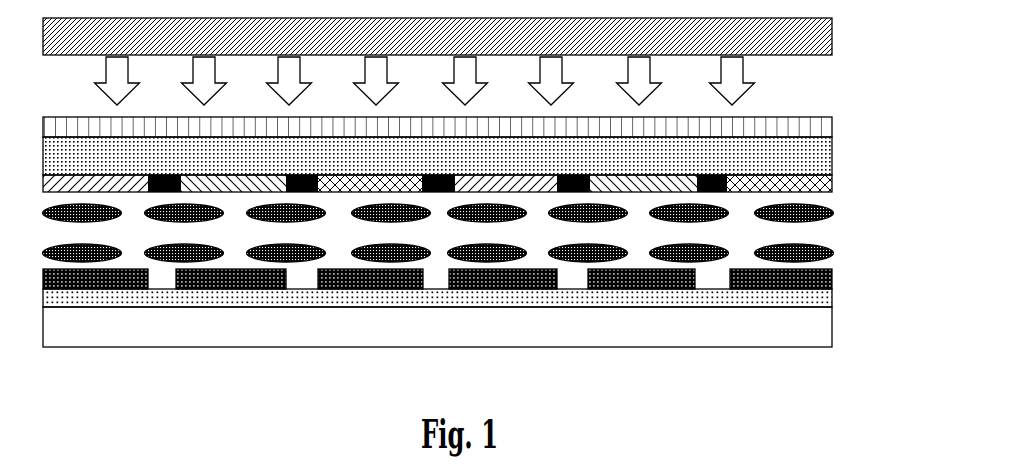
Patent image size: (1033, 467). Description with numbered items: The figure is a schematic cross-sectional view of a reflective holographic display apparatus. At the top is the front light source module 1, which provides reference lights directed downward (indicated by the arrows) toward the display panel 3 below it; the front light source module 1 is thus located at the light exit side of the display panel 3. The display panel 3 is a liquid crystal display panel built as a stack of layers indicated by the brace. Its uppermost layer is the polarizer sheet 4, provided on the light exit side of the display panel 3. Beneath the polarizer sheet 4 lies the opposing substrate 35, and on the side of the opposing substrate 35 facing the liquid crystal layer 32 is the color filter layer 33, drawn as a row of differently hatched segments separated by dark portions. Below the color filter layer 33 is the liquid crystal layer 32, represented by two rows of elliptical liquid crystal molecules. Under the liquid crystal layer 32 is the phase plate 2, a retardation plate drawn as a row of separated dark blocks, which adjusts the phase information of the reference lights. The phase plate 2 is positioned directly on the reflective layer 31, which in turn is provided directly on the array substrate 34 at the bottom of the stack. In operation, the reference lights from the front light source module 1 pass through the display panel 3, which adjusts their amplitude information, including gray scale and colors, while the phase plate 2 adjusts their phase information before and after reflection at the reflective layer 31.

The front light source module 1 is at (810, 36).
The phase plate 2 is at (832, 275).
The display panel 3 is at (485, 242).
The polarizer sheet 4 is at (810, 129).
The reflective layer 31 is at (813, 297).
The liquid crystal layer 32 is at (822, 222).
The color filter layer 33 is at (832, 184).
The array substrate 34 is at (466, 327).
The opposing substrate 35 is at (810, 158).